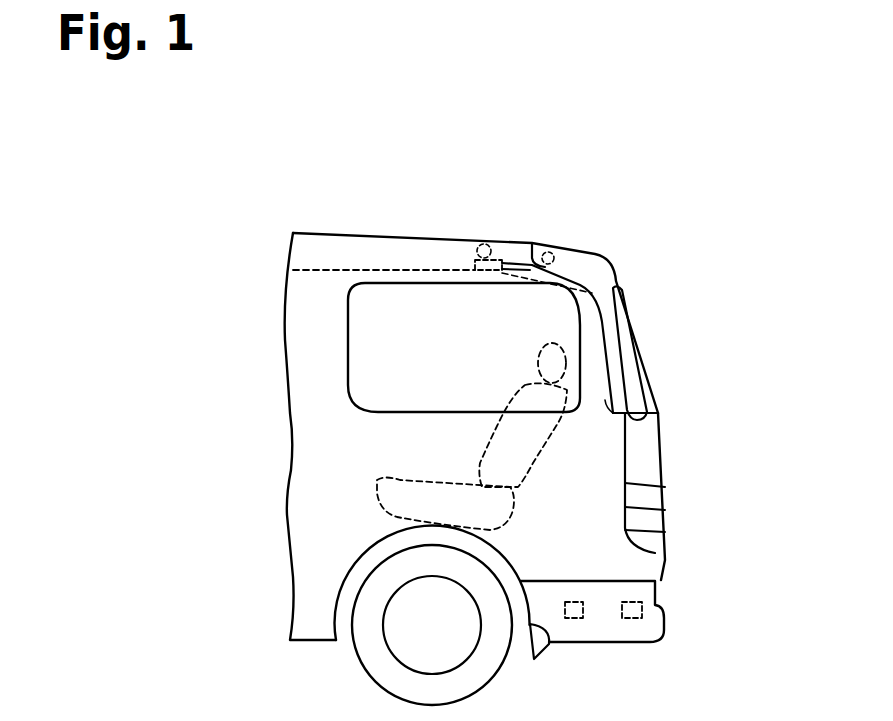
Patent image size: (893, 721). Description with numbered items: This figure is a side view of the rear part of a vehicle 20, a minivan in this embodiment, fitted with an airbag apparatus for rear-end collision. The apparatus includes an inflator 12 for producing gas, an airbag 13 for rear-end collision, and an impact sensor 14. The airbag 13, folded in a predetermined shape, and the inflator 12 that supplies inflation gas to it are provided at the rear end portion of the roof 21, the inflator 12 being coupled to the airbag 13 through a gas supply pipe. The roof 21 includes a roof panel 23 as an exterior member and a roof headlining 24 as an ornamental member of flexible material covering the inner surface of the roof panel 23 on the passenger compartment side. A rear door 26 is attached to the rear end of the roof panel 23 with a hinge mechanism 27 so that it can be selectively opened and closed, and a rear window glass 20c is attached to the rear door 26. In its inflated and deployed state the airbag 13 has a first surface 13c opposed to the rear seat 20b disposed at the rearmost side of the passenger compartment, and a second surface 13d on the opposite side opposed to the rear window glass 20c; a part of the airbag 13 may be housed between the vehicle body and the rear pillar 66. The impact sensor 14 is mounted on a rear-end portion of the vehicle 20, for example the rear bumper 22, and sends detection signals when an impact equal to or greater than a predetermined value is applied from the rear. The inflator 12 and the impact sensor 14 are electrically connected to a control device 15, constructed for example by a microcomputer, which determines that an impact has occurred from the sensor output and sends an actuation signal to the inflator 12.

The vehicle 20 is at (771, 236).
The rear seat 20b is at (485, 443).
The rear window glass 20c is at (659, 402).
The roof 21 is at (402, 193).
The roof panel 23 is at (408, 234).
The roof headlining 24 is at (324, 272).
The inflator 12 is at (486, 244).
The airbag 13 is at (503, 262).
The first surface 13c is at (611, 402).
The second surface 13d is at (636, 340).
The hinge mechanism 27 is at (556, 243).
The rear pillar 66 is at (577, 318).
The rear door 26 is at (647, 457).
The rear bumper 22 is at (667, 620).
The impact sensor 14 is at (632, 620).
The control device 15 is at (577, 620).